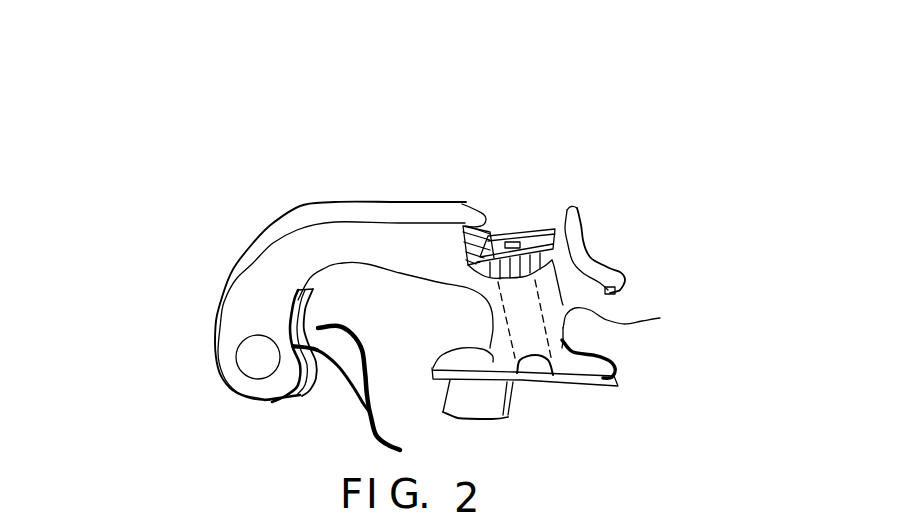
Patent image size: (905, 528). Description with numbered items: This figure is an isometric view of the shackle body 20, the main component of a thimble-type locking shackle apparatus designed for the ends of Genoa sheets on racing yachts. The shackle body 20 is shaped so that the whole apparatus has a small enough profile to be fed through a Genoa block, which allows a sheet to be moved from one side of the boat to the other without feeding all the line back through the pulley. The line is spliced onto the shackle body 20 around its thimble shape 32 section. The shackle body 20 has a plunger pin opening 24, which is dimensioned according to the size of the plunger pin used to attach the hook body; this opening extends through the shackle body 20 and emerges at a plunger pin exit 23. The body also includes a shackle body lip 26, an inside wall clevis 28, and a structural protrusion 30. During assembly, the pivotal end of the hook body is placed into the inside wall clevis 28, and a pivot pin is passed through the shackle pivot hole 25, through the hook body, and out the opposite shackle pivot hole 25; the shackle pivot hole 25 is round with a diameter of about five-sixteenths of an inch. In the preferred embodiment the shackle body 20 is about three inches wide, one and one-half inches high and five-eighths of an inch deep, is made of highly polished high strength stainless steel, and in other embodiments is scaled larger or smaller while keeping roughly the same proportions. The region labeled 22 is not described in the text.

The shackle body 20 is at (116, 121).
The hook body 22 is at (538, 233).
The plunger pin exit 23 is at (547, 387).
The plunger pin opening 24 is at (545, 285).
The shackle pivot hole 25 is at (258, 357).
The shackle body lip 26 is at (462, 205).
The inside wall clevis 28 is at (342, 382).
The structural protrusion 30 is at (477, 407).
The thimble shape 32 is at (573, 303).